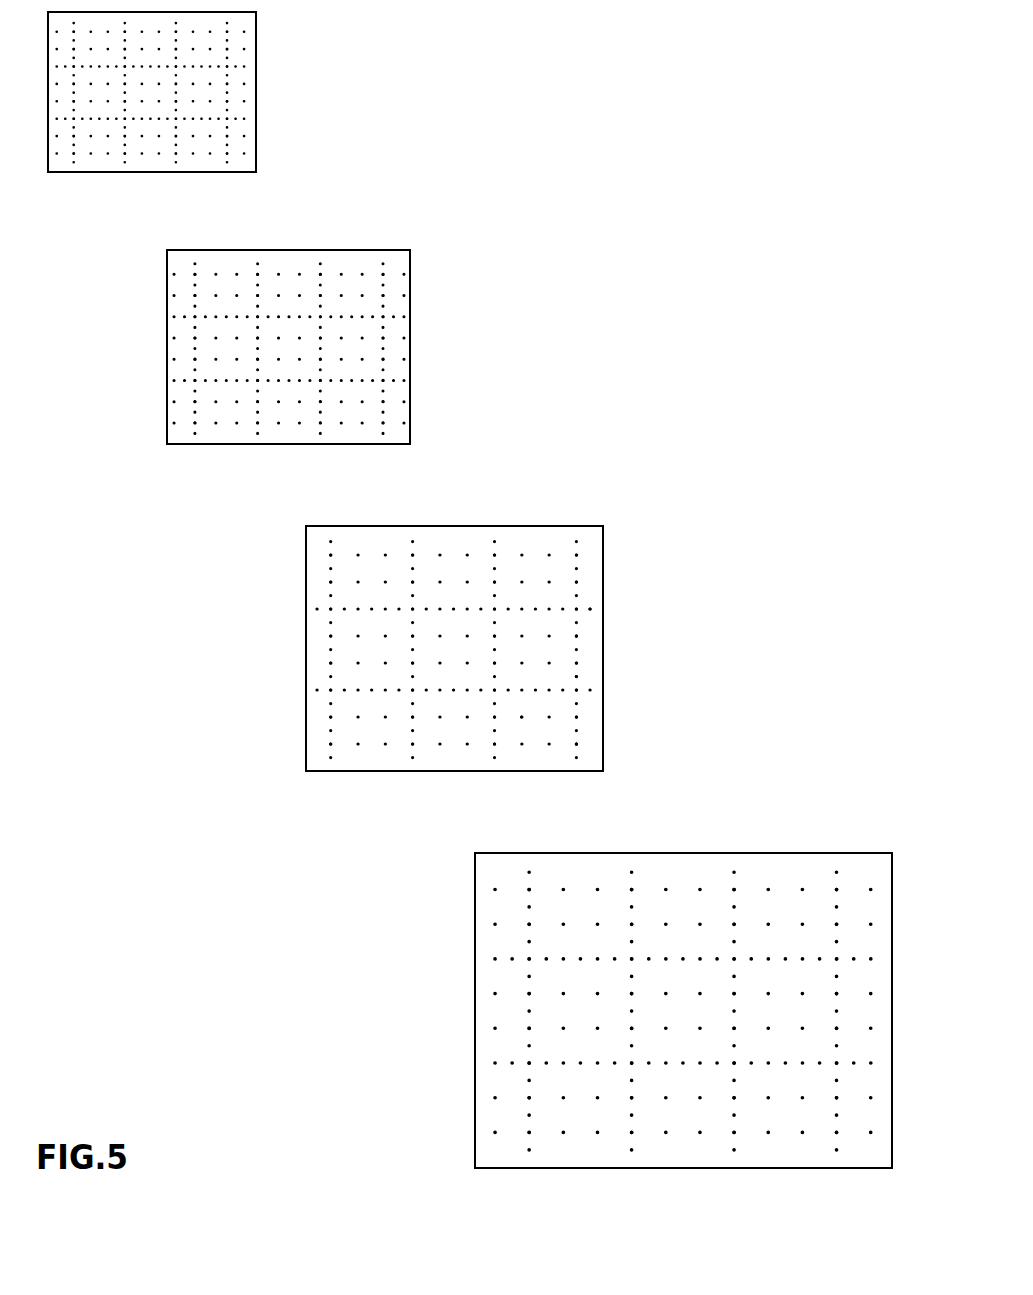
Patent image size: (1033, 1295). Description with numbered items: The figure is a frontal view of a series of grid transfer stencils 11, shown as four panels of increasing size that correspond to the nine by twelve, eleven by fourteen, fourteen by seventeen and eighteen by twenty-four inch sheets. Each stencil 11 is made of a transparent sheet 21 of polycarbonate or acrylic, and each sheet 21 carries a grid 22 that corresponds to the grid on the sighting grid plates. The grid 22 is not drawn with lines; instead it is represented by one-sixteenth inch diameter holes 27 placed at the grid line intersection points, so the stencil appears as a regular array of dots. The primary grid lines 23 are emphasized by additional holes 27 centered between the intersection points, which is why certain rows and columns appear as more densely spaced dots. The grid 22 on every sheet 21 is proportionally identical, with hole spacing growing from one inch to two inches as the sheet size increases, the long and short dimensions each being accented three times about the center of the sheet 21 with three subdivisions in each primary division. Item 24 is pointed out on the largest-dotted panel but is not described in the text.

The grid transfer stencil 11 is at (273, 123).
The transparent sheet 21 is at (606, 601).
The grid 22 is at (539, 615).
The primary grid lines 23 is at (580, 678).
The fourth dot 24 is at (525, 720).
The holes 27 is at (575, 744).